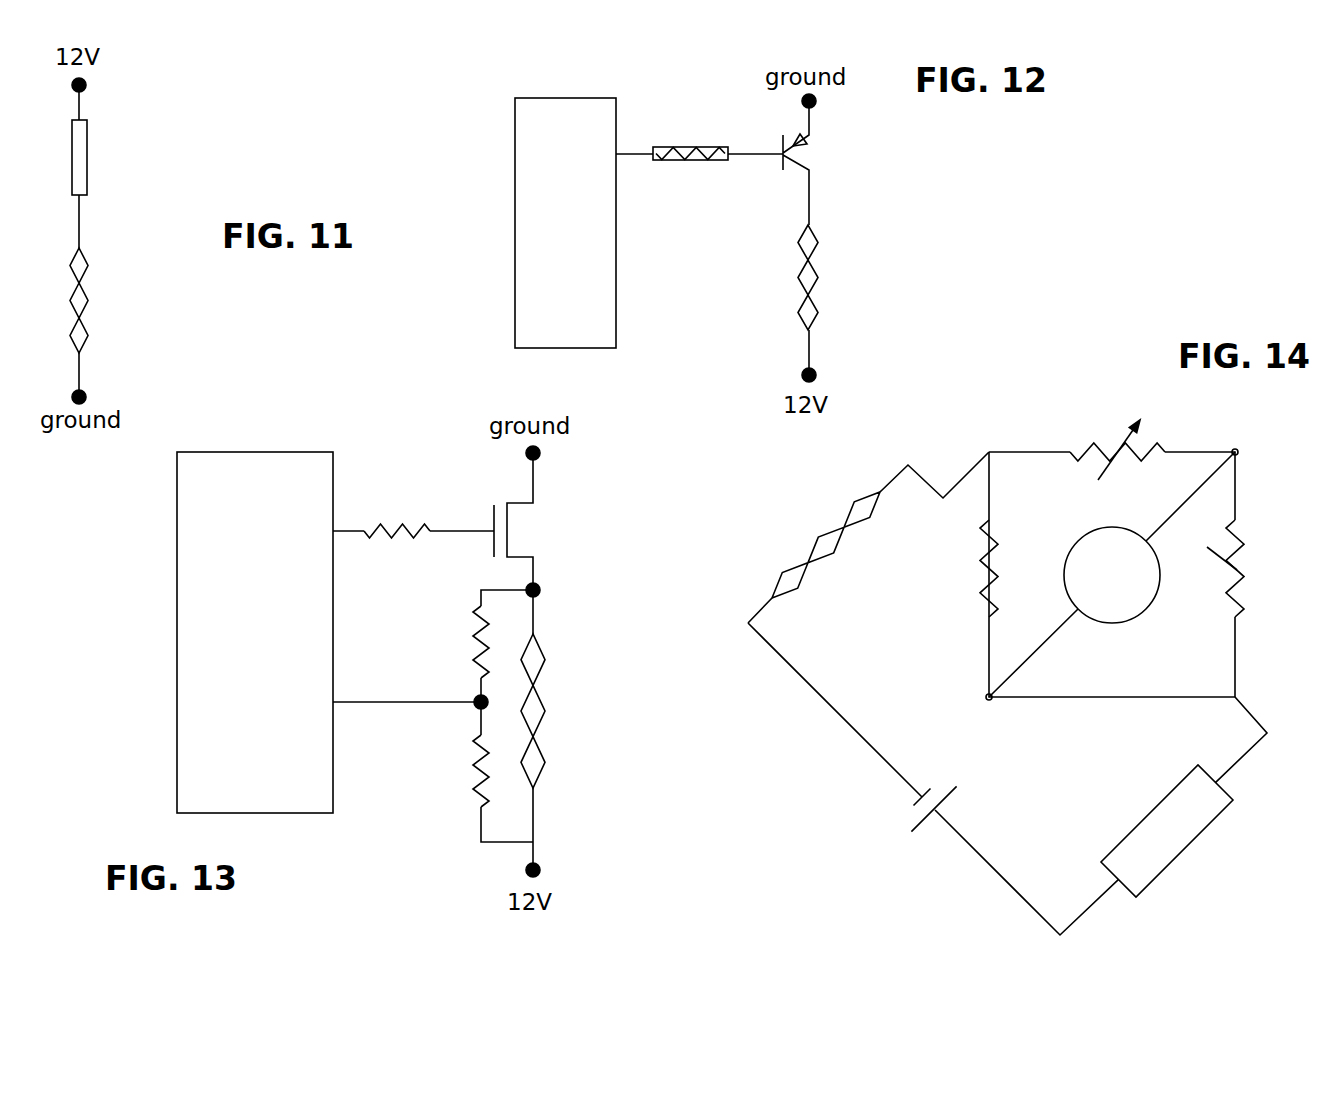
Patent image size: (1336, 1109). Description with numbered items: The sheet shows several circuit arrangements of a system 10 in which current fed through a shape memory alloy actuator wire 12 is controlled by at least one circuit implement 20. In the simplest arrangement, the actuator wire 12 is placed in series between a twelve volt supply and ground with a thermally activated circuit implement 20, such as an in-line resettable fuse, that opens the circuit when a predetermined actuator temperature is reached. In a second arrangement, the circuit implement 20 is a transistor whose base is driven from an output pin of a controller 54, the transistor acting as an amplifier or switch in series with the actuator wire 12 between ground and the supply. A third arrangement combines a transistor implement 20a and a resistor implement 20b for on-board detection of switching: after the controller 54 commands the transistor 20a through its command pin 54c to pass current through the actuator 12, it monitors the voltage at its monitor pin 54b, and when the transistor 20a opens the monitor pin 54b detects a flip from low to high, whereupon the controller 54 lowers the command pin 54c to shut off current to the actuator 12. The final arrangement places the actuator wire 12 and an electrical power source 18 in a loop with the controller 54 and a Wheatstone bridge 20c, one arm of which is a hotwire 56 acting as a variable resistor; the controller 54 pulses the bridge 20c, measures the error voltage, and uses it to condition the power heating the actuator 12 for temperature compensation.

In FIG. 14, the system 10 is at (782, 698).
In FIG. 11, the shape memory alloy actuator wire 12 is at (87, 307).
In FIG. 12, the shape memory alloy actuator wire 12 is at (818, 287).
In FIG. 13, the shape memory alloy actuator wire 12 is at (543, 729).
In FIG. 14, the shape memory alloy actuator wire 12 is at (822, 532).
In FIG. 14, the electrical power source 18 is at (911, 832).
In FIG. 11, the circuit implement 20 is at (103, 163).
In FIG. 12, the circuit implement 20 is at (833, 166).
In FIG. 13, the transistor implement 20a is at (536, 537).
In FIG. 13, the resistor implement 20b is at (474, 637).
In FIG. 14, the Wheatstone bridge 20c is at (1009, 431).
In FIG. 12, the controller 54 is at (616, 285).
In FIG. 13, the controller 54 is at (275, 541).
In FIG. 14, the controller 54 is at (1147, 883).
In FIG. 13, the monitor pin 54b is at (333, 702).
In FIG. 13, the command pin 54c is at (335, 531).
In FIG. 14, the hotwire 56 is at (1105, 444).